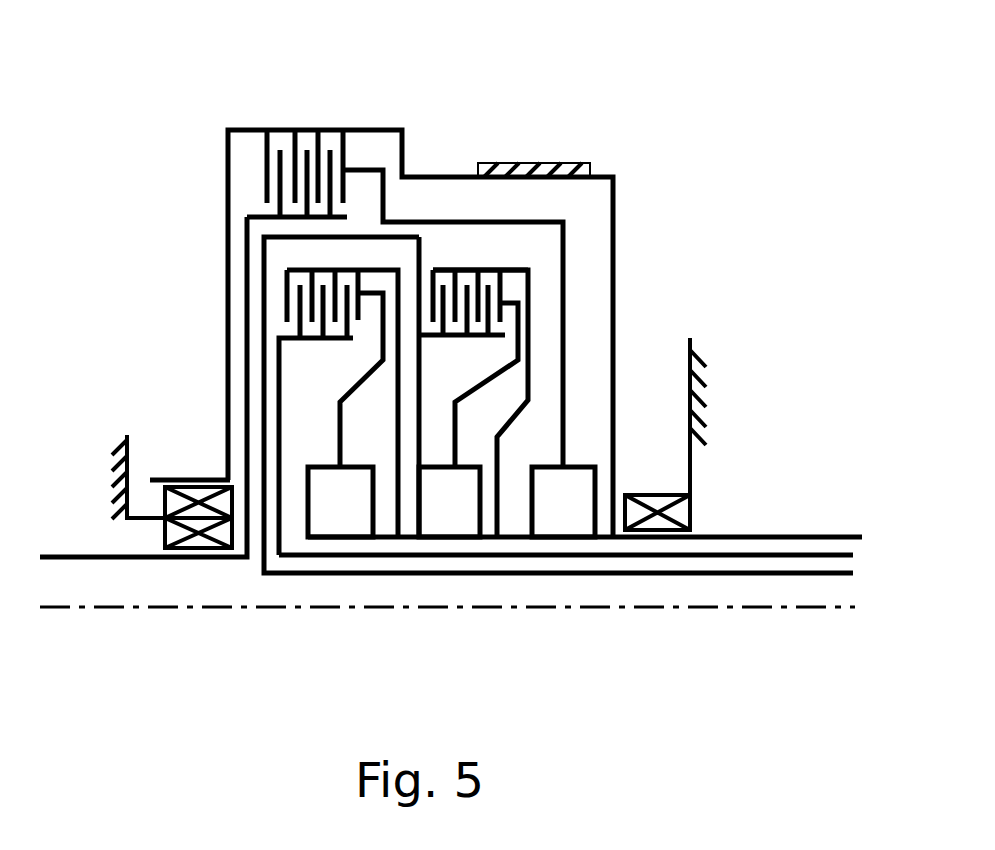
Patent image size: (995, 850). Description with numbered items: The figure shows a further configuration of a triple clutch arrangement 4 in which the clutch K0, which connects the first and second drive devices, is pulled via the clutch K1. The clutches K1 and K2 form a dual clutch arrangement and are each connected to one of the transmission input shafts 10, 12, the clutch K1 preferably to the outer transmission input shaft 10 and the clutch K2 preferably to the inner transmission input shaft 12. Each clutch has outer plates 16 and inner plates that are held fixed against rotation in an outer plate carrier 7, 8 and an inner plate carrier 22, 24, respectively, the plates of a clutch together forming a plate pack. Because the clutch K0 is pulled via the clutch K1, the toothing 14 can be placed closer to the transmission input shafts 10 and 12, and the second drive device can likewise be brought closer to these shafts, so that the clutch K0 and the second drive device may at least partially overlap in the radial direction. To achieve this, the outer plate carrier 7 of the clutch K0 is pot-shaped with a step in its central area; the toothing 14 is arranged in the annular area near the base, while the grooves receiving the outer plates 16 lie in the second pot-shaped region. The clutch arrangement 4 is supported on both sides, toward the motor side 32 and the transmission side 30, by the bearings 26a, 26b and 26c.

The clutch arrangement 4 is at (660, 146).
The outer plate carrier 7 is at (365, 128).
The outer plate carrier 8 is at (463, 267).
The outer transmission input shaft 10 is at (483, 557).
The inner transmission input shaft 12 is at (555, 577).
The toothing 14 is at (483, 160).
The outer plates 16 is at (265, 167).
The inner plate carrier 22 is at (428, 340).
The inner plate carrier 24 is at (276, 400).
The bearing 26a is at (680, 513).
The bearing 26b is at (198, 485).
The bearing 26c is at (198, 550).
The transmission side 30 is at (739, 246).
The motor side 32 is at (152, 240).
The clutch K0 is at (280, 105).
The clutch K1 is at (283, 293).
The clutch K2 is at (532, 292).